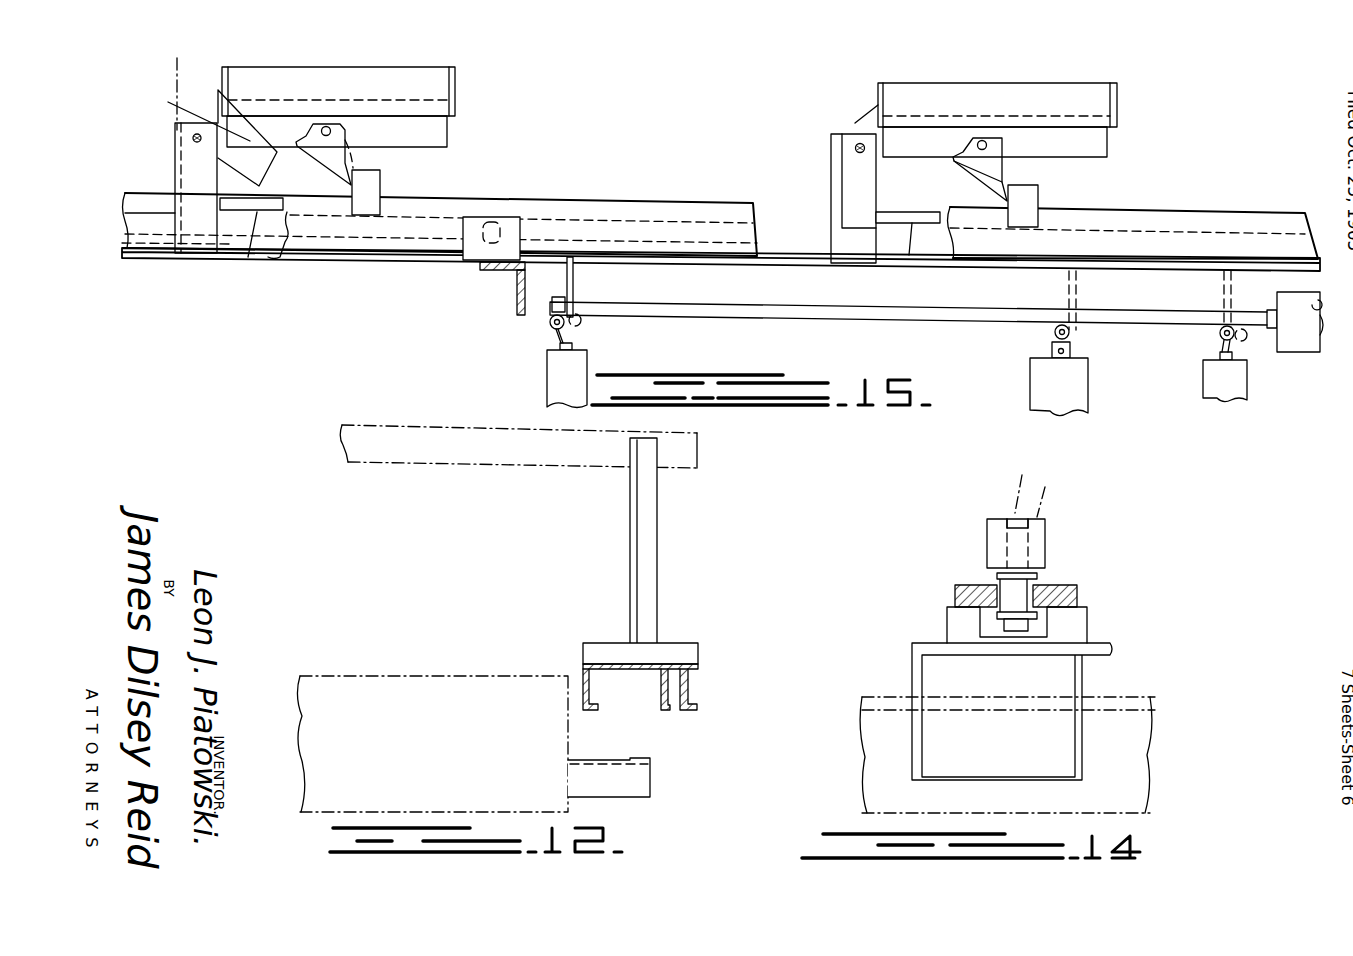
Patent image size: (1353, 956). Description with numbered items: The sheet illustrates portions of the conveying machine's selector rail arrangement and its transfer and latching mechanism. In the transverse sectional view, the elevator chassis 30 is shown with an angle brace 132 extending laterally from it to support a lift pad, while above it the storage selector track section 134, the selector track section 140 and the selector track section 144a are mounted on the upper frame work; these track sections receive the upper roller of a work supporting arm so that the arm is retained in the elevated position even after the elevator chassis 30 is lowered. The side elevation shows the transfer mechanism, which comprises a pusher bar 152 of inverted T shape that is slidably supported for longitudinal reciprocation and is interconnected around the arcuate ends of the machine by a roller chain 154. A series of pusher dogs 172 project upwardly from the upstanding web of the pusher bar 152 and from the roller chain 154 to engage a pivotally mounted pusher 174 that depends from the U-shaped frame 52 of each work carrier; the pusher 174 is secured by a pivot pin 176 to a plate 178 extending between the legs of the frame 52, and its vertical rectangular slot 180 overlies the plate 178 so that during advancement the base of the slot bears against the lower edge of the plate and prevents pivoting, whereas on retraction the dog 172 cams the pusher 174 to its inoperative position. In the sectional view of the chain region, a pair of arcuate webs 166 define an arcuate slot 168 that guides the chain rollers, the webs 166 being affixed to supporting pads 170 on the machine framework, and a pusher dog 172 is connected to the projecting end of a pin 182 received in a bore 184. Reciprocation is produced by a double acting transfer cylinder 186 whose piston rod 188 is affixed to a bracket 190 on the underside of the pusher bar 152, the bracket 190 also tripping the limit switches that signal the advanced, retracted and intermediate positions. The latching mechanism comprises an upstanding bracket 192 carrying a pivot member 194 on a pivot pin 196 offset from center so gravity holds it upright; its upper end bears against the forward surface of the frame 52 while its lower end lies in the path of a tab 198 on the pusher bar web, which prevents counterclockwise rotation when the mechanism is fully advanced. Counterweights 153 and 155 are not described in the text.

In FIG. 12, the elevator chassis 30 is at (369, 687).
In FIG. 15, the U-shaped frame 52 is at (457, 84).
In FIG. 12, the angle brace 132 is at (633, 780).
In FIG. 12, the storage selector track section 134 is at (579, 677).
In FIG. 12, the selector track section 140 is at (690, 690).
In FIG. 12, the selector track section 144a is at (663, 689).
In FIG. 15, the pusher bar 152 is at (622, 208).
In FIG. 15, the counterweight 153 is at (575, 368).
In FIG. 15, the roller chain 154 is at (1230, 390).
In FIG. 14, the roller chain 154 is at (1033, 588).
In FIG. 15, the counterweight 155 is at (1040, 368).
In FIG. 14, the arcuate web 166 is at (955, 594).
In FIG. 14, the arcuate slot 168 is at (997, 575).
In FIG. 14, the supporting pad 170 is at (1077, 623).
In FIG. 15, the pusher dog 172 is at (373, 183).
In FIG. 14, the pusher dog 172 is at (1038, 541).
In FIG. 15, the pivotally mounted pusher 174 is at (348, 143).
In FIG. 15, the pivot pin 176 is at (328, 124).
In FIG. 15, the plate 178 is at (435, 138).
In FIG. 15, the vertical rectangular slot 180 is at (1002, 102).
In FIG. 14, the pin 182 is at (1048, 490).
In FIG. 14, the bore 184 is at (1014, 480).
In FIG. 15, the transfer cylinder 186 is at (1298, 338).
In FIG. 15, the piston rod 188 is at (940, 283).
In FIG. 15, the bracket 190 is at (575, 283).
In FIG. 15, the upstanding bracket 192 is at (180, 168).
In FIG. 15, the pivot member 194 is at (199, 102).
In FIG. 15, the pivot pin 196 is at (197, 137).
In FIG. 15, the tab 198 is at (253, 206).